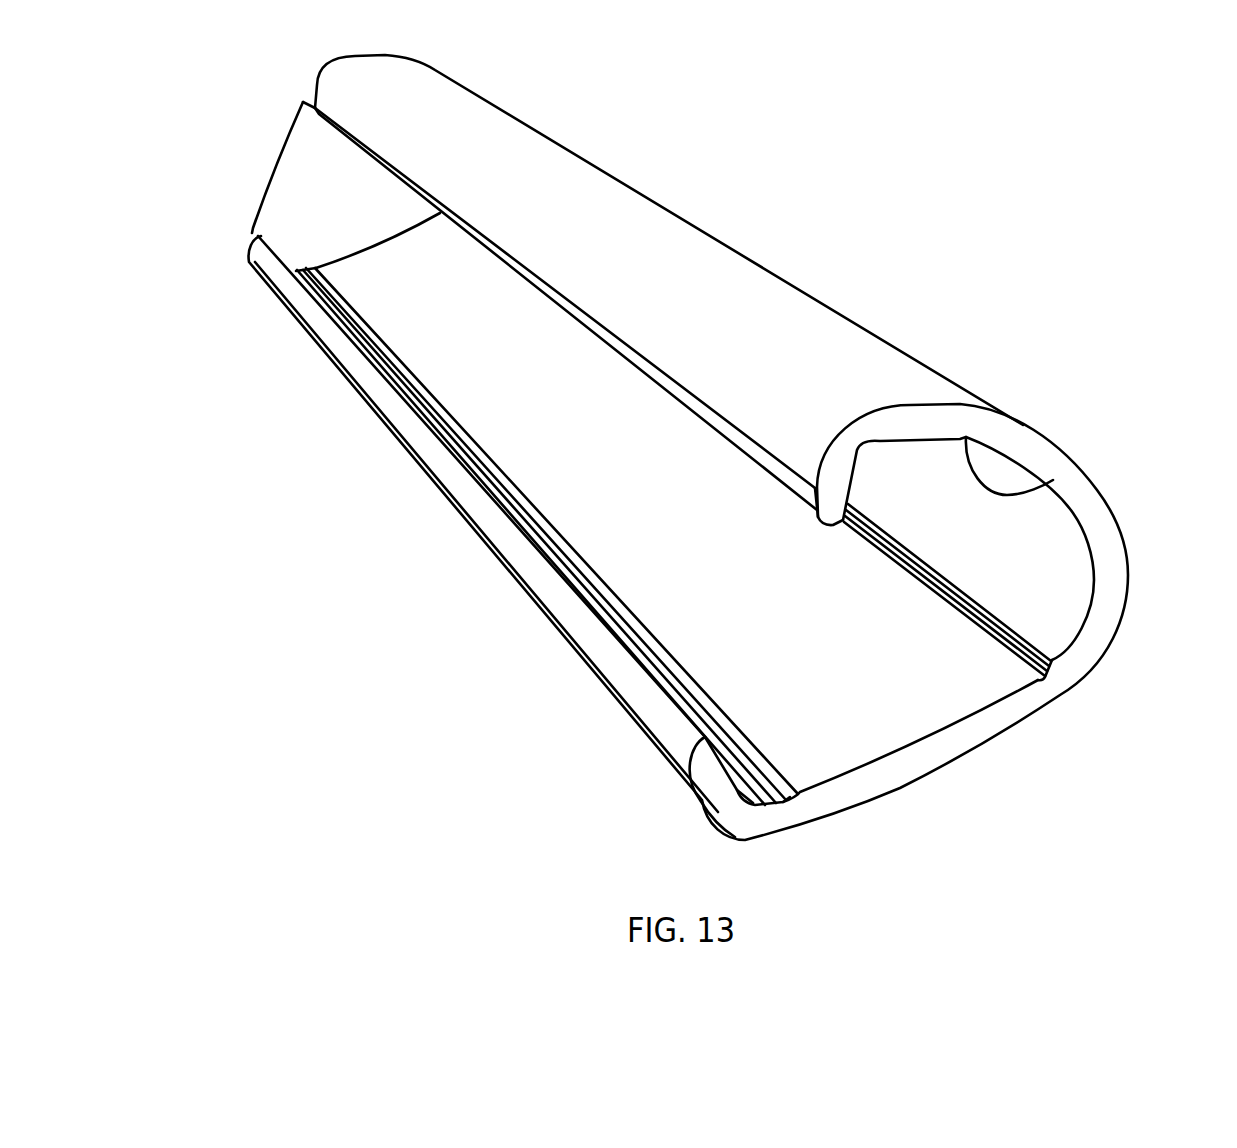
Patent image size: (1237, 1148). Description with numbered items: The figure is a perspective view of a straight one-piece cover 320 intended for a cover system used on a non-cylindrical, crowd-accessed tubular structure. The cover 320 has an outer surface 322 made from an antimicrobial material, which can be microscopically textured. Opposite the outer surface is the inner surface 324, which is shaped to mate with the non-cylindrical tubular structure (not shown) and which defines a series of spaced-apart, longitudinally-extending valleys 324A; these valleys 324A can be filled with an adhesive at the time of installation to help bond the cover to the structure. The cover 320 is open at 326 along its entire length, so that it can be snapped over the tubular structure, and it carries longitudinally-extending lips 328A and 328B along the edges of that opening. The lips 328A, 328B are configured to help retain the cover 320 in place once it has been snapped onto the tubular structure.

The one-piece cover 320 is at (700, 480).
The outer surface 322 is at (850, 340).
The inner surface 324 is at (890, 742).
The longitudinally-extending valleys 324A is at (1053, 480).
The opening 326 is at (278, 163).
The longitudinally-extending lip 328A is at (827, 508).
The longitudinally-extending lip 328B is at (703, 758).